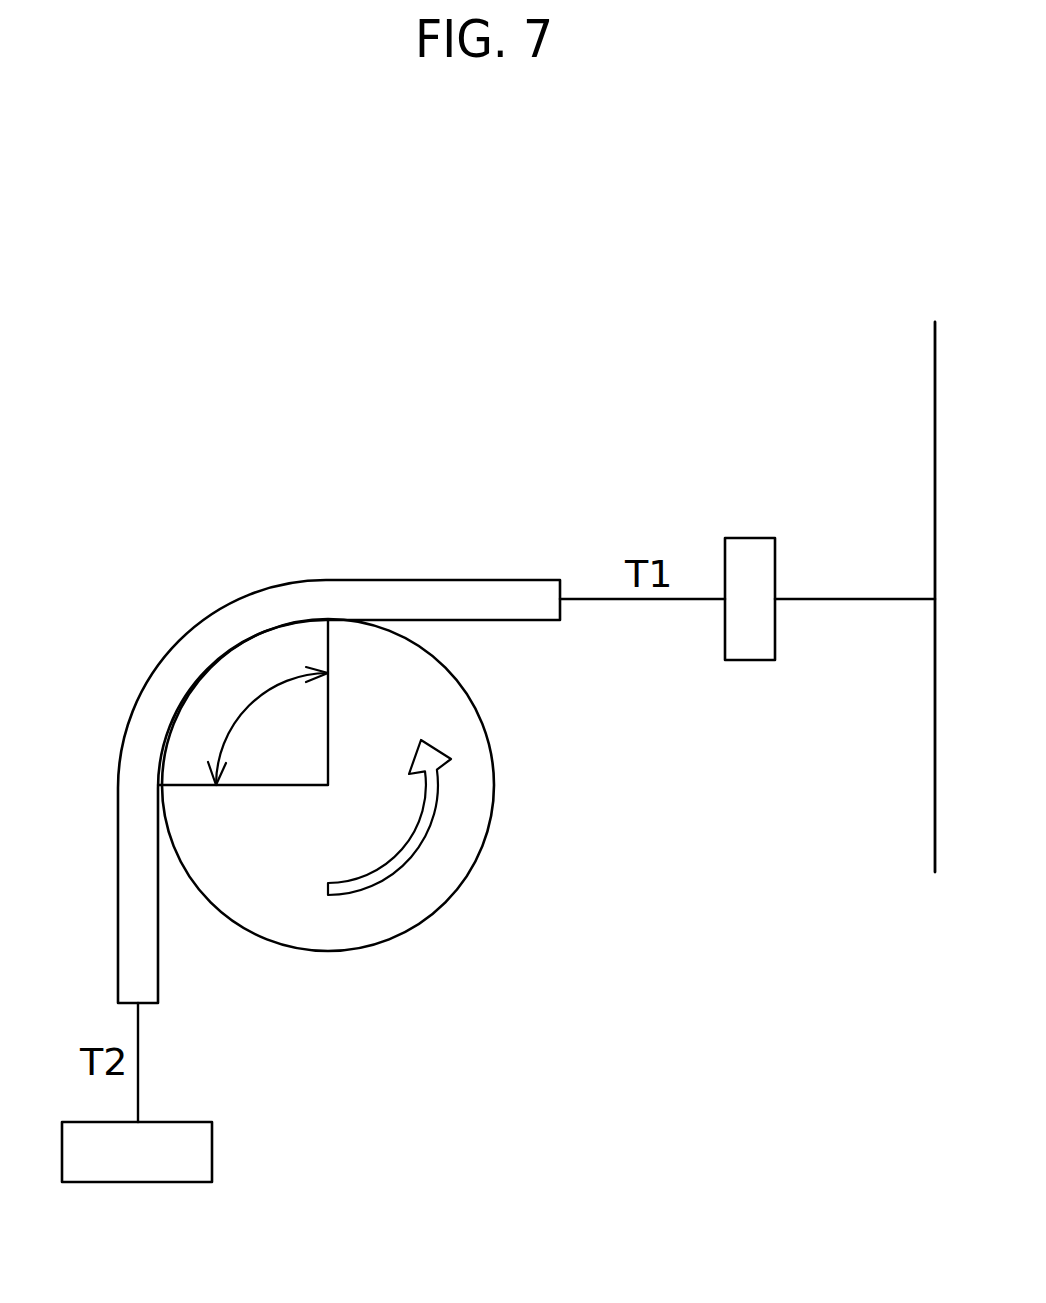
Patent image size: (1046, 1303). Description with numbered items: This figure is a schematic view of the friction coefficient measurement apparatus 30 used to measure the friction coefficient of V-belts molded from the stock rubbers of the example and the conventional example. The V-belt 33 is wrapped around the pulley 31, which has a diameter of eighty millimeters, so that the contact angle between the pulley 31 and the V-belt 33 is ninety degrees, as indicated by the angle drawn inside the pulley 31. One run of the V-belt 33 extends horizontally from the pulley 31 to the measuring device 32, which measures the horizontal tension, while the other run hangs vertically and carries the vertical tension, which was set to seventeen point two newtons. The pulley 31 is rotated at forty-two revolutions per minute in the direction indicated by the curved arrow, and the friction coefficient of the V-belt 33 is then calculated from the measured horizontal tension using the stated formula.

The friction coefficient measurement apparatus 30 is at (349, 693).
The pulley 31 is at (480, 850).
The measuring device 32 is at (748, 660).
The V-belt 33 is at (218, 530).